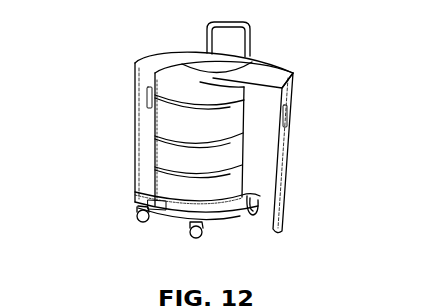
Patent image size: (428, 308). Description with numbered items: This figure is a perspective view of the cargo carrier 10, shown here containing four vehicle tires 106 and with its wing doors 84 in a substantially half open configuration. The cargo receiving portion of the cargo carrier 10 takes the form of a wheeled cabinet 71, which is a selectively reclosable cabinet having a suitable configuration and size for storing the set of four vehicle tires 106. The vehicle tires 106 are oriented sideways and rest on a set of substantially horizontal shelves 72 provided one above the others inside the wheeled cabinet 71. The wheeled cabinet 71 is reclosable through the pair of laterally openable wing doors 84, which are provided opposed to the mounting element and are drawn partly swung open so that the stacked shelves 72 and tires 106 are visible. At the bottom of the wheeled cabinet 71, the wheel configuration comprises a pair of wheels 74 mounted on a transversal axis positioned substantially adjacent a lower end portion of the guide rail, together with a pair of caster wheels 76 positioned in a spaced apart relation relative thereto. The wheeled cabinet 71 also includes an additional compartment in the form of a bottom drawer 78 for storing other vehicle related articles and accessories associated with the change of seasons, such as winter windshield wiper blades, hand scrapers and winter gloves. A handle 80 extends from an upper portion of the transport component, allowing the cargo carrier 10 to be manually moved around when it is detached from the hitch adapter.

The cargo carrier 10 is at (53, 100).
The wheeled cabinet 71 is at (191, 46).
The shelves 72 is at (244, 100).
The wheels 74 is at (261, 204).
The caster wheels 76 is at (140, 216).
The bottom drawer 78 is at (170, 213).
The handle 80 is at (253, 19).
The wing doors 84 is at (147, 62).
The vehicle tires 106 is at (162, 86).